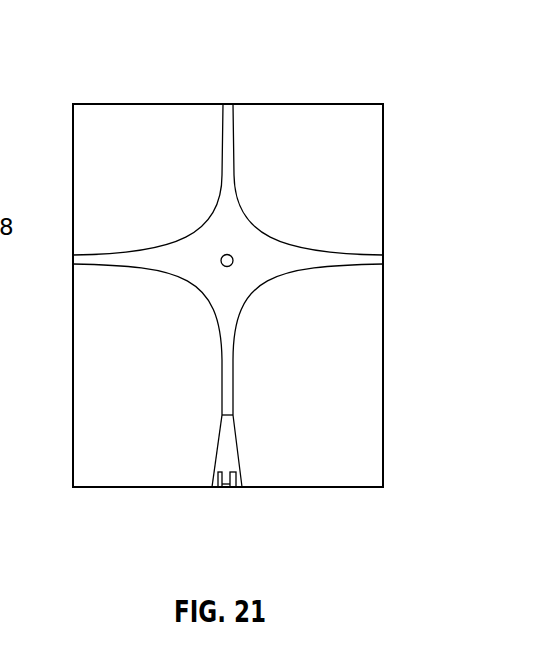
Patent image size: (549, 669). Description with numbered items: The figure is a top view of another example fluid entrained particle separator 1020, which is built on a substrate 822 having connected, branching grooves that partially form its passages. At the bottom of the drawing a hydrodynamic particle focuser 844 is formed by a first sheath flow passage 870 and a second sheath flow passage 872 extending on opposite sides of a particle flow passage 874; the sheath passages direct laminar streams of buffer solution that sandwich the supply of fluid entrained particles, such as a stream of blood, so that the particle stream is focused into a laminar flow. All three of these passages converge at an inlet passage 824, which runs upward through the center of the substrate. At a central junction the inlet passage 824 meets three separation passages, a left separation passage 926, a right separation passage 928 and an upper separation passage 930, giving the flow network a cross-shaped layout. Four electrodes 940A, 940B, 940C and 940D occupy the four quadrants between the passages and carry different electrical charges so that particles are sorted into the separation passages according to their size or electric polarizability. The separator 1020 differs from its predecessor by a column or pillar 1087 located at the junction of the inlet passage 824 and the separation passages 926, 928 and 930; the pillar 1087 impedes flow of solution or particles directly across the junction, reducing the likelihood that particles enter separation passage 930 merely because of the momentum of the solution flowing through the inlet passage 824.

The fluid entrained particle separator 1020 is at (318, 101).
The substrate 822 is at (73, 397).
The inlet passage 824 is at (233, 383).
The particle focuser 844 is at (206, 473).
The sheath flow passage 870 is at (214, 476).
The sheath flow passage 872 is at (243, 474).
The particle flow passage 874 is at (226, 488).
The separation passage 926 is at (100, 253).
The separation passage 928 is at (358, 252).
The separation passage 930 is at (233, 142).
The electrode 940A is at (165, 380).
The electrode 940B is at (362, 380).
The electrode 940C is at (173, 175).
The electrode 940D is at (362, 176).
The pillar 1087 is at (227, 267).